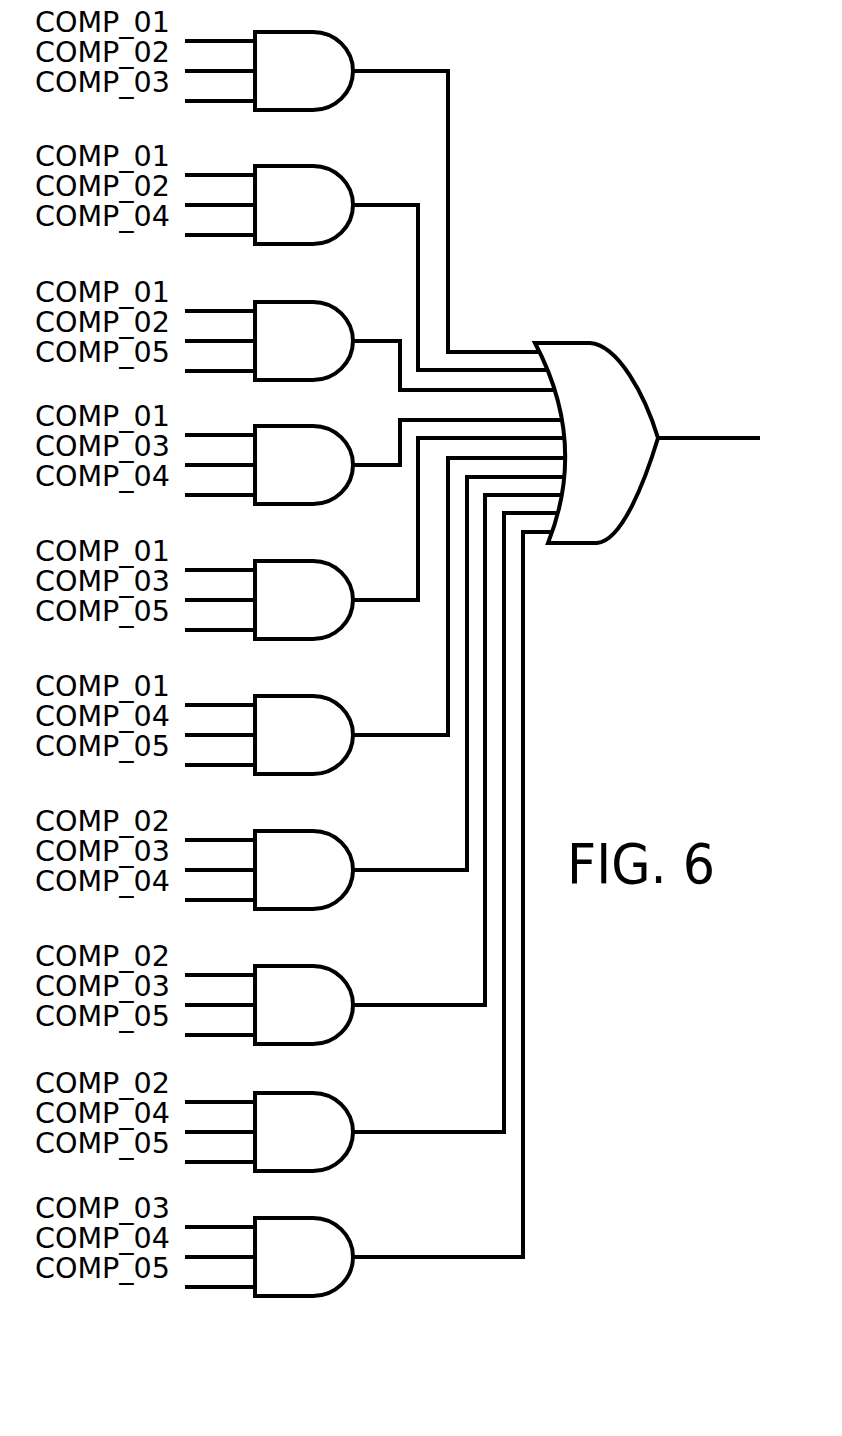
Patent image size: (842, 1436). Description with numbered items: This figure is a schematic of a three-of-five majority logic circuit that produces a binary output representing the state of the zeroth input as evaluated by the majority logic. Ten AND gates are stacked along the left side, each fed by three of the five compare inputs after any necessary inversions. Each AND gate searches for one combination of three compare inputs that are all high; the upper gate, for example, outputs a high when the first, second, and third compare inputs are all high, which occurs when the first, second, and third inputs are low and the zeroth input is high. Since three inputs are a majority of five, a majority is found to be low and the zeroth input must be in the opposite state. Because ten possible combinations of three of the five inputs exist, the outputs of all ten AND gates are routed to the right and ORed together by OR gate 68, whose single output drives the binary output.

The OR gate 68 is at (627, 453).